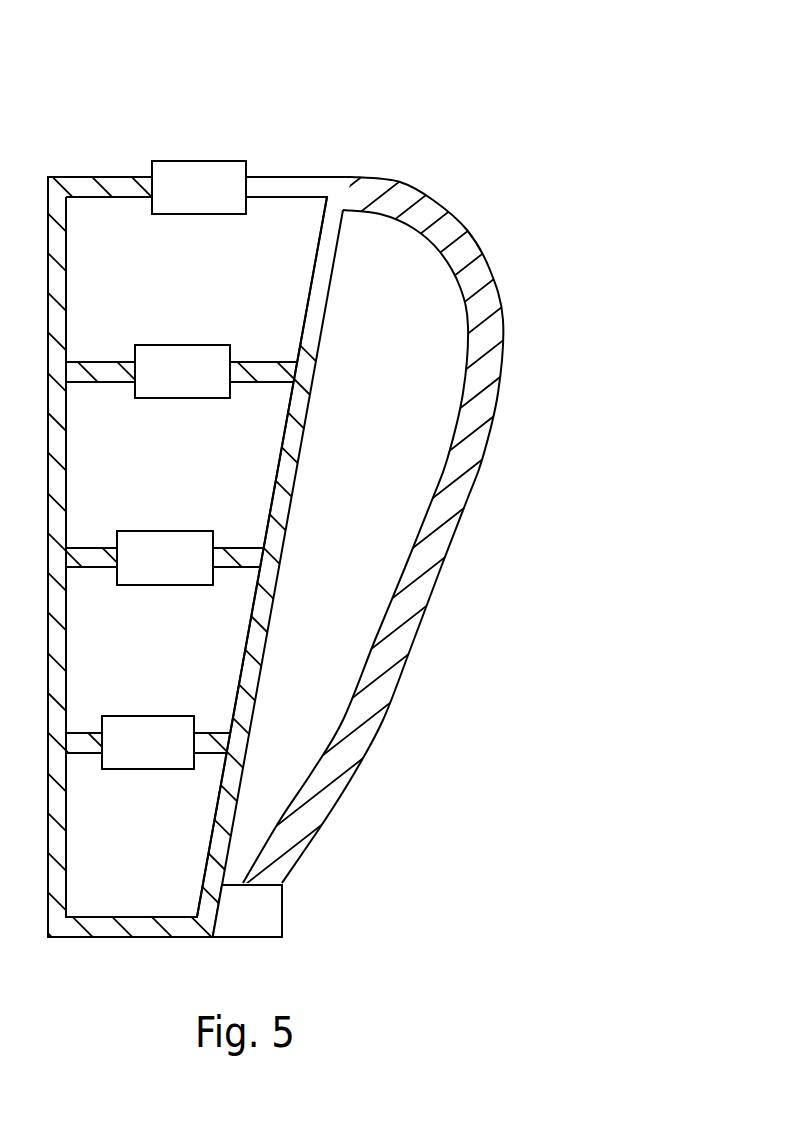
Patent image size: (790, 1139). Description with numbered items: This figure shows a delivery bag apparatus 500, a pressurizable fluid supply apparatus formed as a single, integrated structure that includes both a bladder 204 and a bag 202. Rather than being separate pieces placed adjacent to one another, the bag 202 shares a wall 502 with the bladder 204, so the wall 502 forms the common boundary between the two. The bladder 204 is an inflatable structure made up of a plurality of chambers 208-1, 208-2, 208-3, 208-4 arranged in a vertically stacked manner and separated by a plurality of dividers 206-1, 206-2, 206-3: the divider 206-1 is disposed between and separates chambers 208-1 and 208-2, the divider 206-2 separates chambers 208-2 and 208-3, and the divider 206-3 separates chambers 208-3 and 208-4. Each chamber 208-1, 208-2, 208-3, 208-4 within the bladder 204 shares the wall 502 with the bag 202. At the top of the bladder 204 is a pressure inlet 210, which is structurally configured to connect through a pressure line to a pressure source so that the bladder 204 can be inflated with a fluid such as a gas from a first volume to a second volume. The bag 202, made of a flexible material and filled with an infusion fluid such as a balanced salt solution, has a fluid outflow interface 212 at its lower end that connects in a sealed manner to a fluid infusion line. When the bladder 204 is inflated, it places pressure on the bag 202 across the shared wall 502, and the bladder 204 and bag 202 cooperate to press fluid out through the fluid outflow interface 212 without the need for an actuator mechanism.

The delivery bag apparatus 500 is at (372, 63).
The bag 202 is at (428, 192).
The bladder 204 is at (117, 176).
The divider 206-1 is at (215, 383).
The divider 206-2 is at (199, 568).
The divider 206-3 is at (183, 755).
The chamber 208-1 is at (223, 292).
The chamber 208-2 is at (205, 477).
The chamber 208-3 is at (188, 662).
The chamber 208-4 is at (172, 847).
The pressure inlet 210 is at (222, 200).
The fluid outflow interface 212 is at (245, 927).
The wall 502 is at (298, 472).